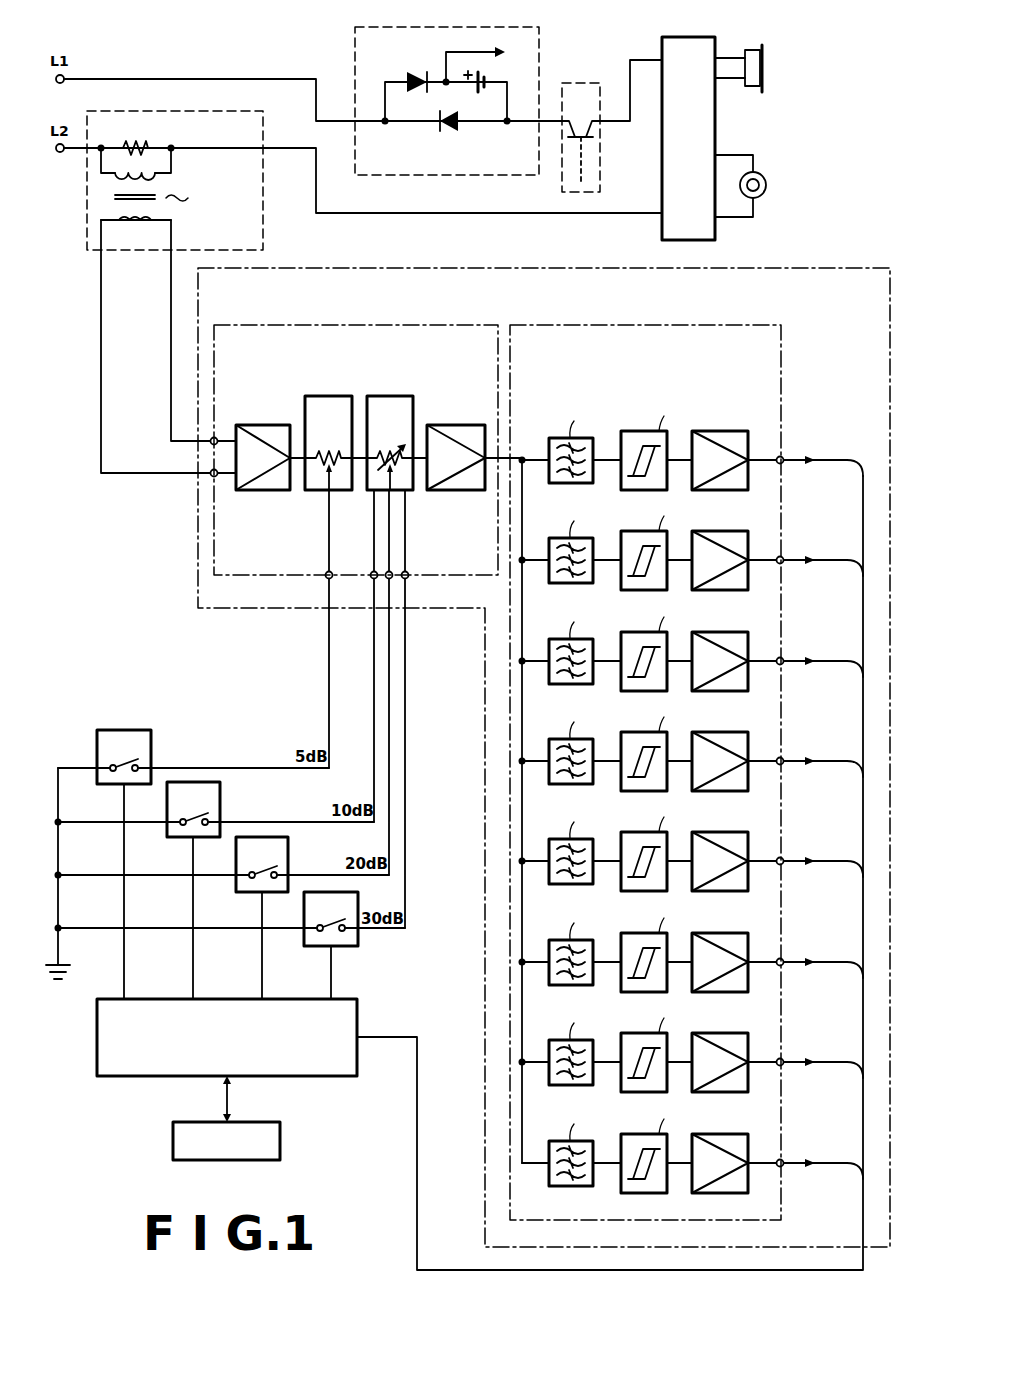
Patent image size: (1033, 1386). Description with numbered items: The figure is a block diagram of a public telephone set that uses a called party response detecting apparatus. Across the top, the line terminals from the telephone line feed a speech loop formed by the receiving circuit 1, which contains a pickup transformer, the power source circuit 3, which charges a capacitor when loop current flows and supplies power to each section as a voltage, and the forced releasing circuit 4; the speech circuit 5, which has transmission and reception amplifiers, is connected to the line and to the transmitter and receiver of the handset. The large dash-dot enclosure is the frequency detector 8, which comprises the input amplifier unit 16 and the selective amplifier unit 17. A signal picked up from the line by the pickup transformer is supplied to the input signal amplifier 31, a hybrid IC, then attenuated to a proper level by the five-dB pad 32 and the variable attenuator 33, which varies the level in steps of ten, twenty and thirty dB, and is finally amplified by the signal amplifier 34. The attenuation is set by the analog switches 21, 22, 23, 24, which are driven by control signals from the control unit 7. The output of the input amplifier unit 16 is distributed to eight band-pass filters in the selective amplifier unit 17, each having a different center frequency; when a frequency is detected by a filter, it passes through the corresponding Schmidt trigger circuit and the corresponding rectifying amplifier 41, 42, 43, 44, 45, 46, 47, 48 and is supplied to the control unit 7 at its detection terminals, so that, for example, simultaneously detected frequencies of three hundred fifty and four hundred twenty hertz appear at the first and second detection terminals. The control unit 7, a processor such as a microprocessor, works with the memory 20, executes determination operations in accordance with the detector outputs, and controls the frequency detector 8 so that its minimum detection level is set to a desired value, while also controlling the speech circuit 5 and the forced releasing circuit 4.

The receiving circuit 1 is at (263, 213).
The power source circuit 3 is at (363, 27).
The forced releasing circuit 4 is at (585, 80).
The speech circuit 5 is at (704, 37).
The control unit 7 is at (357, 1013).
The frequency detector 8 is at (860, 270).
The input amplifier unit 16 is at (470, 325).
The selective amplifier unit 17 is at (760, 325).
The memory 20 is at (280, 1141).
The analog switch 21 is at (97, 786).
The analog switch 22 is at (167, 839).
The analog switch 23 is at (236, 894).
The analog switch 24 is at (304, 948).
The input signal amplifier 31 is at (250, 491).
The 5-dB pad 32 is at (316, 491).
The variable attenuator 33 is at (367, 491).
The signal amplifier 34 is at (447, 491).
The rectifying amplifier 41 is at (736, 431).
The rectifying amplifier 42 is at (736, 531).
The rectifying amplifier 43 is at (736, 632).
The rectifying amplifier 44 is at (736, 732).
The rectifying amplifier 45 is at (736, 832).
The rectifying amplifier 46 is at (736, 933).
The rectifying amplifier 47 is at (736, 1033).
The rectifying amplifier 48 is at (736, 1134).